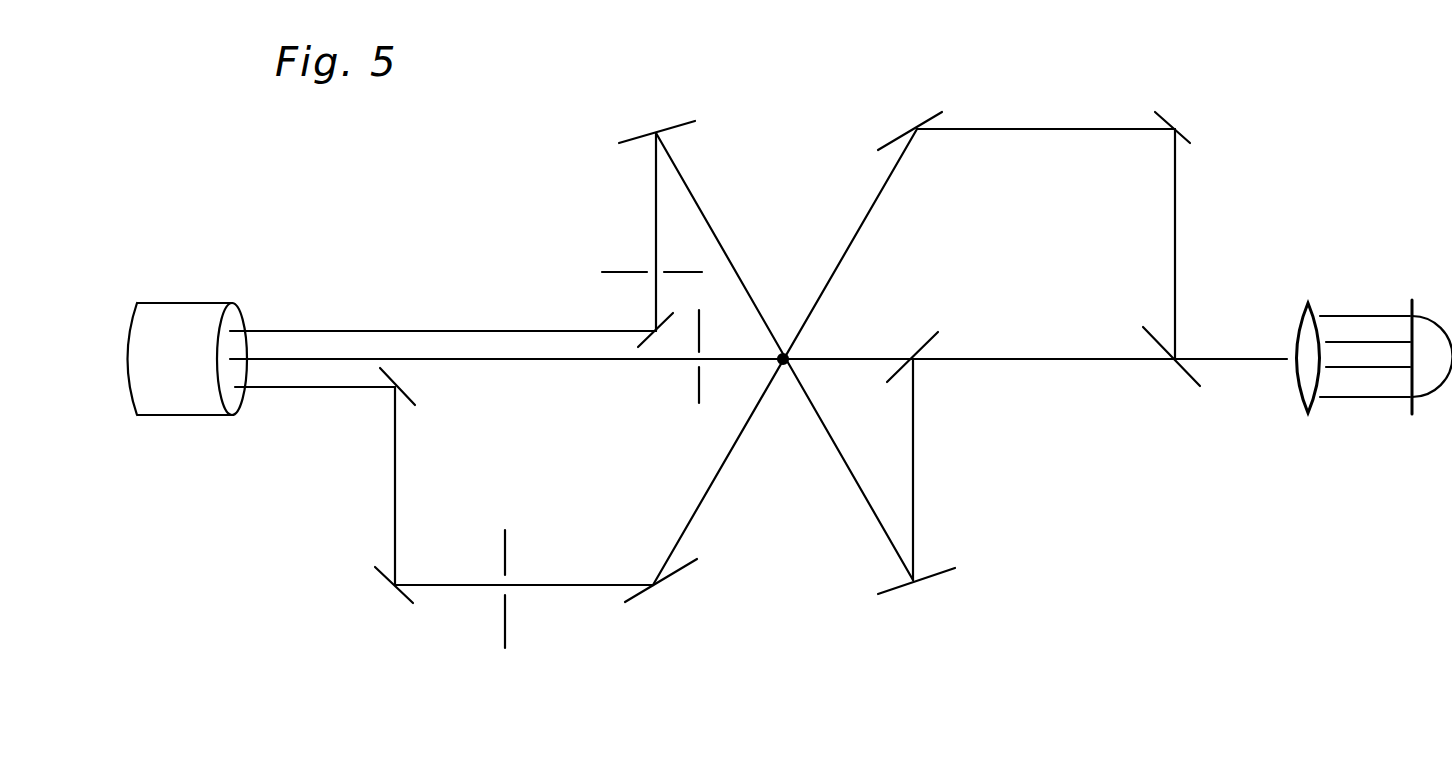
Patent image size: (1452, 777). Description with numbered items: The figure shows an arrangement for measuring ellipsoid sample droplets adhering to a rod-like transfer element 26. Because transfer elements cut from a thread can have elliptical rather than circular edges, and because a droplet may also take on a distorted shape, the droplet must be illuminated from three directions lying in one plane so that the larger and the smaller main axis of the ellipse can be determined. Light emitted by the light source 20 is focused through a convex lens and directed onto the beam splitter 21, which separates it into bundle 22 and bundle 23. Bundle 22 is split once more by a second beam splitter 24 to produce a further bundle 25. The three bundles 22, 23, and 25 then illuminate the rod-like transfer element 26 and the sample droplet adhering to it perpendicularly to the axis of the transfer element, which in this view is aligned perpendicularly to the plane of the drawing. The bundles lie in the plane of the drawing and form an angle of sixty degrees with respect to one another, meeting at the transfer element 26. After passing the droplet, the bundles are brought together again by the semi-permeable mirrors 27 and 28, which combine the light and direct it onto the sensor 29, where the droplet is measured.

The light source 20 is at (1428, 378).
The beam splitter 21 is at (1183, 383).
The bundle 22 is at (1062, 361).
The bundle 23 is at (1175, 265).
The beam splitter 24 is at (932, 335).
The bundle 25 is at (913, 477).
The rod-like transfer element 26 is at (783, 366).
The semi-permeable mirror 27 is at (641, 343).
The semi-permeable mirror 28 is at (410, 393).
The sensor 29 is at (187, 400).